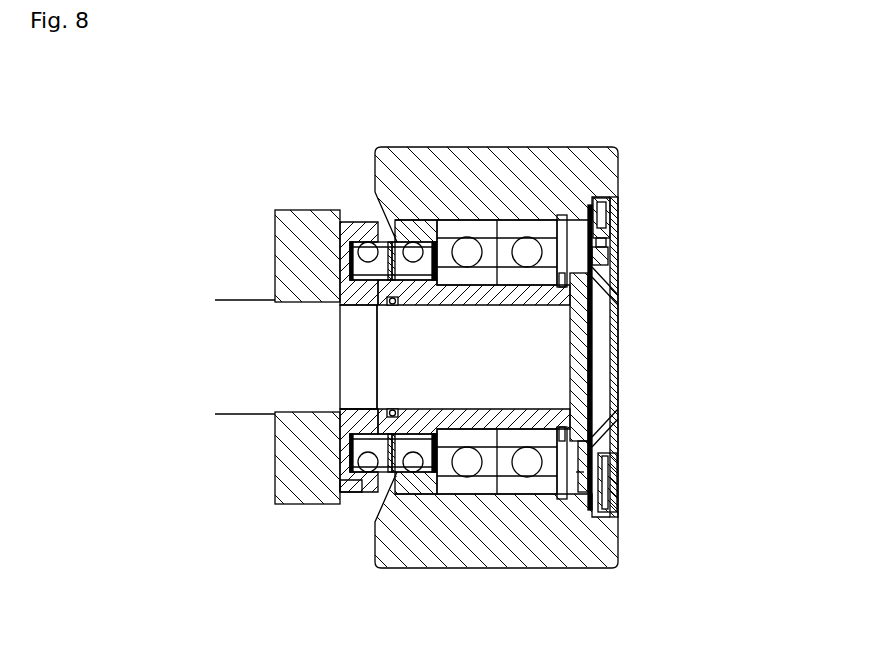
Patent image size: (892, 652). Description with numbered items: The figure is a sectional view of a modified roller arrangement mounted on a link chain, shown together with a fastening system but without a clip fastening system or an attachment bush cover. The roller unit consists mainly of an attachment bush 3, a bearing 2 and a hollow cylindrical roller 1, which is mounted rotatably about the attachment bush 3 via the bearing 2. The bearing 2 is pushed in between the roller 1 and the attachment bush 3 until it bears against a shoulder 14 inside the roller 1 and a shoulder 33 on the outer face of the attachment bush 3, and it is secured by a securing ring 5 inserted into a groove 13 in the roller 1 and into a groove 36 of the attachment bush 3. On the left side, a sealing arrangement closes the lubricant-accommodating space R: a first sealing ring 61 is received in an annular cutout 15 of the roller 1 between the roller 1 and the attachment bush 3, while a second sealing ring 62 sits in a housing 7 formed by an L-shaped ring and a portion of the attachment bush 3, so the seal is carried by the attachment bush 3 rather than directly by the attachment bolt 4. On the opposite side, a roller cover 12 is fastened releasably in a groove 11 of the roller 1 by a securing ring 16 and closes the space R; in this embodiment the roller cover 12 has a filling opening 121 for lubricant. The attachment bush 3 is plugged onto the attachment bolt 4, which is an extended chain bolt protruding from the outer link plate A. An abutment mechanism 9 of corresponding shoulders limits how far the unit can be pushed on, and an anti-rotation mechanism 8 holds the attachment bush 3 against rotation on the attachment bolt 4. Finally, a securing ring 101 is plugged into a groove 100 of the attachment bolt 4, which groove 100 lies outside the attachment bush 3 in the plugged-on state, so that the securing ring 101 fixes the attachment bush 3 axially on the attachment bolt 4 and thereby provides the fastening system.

The roller 1 is at (486, 147).
The bearing 2 is at (498, 220).
The attachment bush 3 is at (365, 440).
The attachment bolt 4 is at (613, 365).
The securing ring 5 is at (612, 245).
The housing 7 is at (367, 472).
The anti-rotation mechanism 8 is at (372, 405).
The abutment mechanism 9 is at (375, 385).
The groove 11 is at (603, 193).
The roller cover 12 is at (593, 270).
The groove 13 is at (563, 215).
The shoulder 14 is at (436, 220).
The annular cutout 15 is at (397, 475).
The securing ring 16 is at (612, 215).
The shoulder 33 is at (385, 303).
The groove 36 is at (618, 483).
The first sealing ring 61 is at (408, 245).
The second sealing ring 62 is at (368, 245).
The groove 100 is at (598, 405).
The securing ring 101 is at (600, 300).
The filling opening 121 is at (602, 255).
The outer link plate A is at (275, 232).
The lubricant-accommodating space R is at (580, 472).